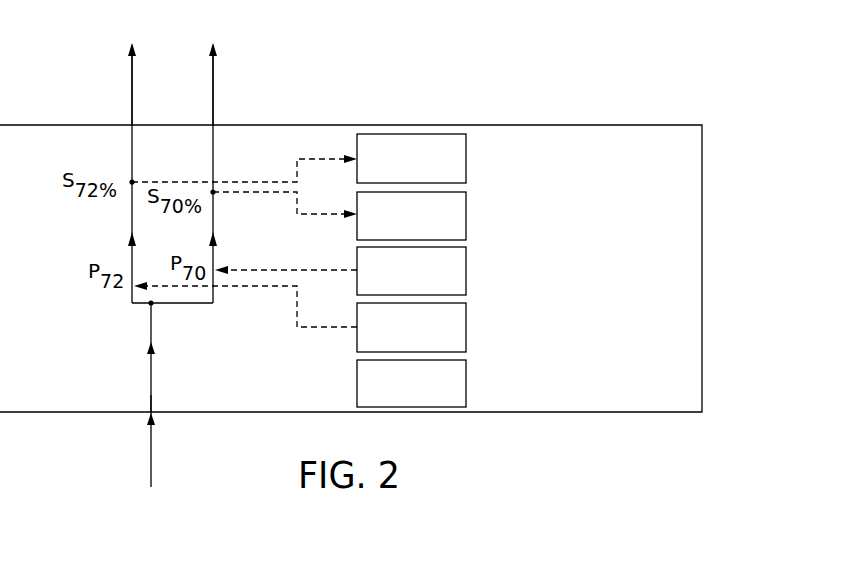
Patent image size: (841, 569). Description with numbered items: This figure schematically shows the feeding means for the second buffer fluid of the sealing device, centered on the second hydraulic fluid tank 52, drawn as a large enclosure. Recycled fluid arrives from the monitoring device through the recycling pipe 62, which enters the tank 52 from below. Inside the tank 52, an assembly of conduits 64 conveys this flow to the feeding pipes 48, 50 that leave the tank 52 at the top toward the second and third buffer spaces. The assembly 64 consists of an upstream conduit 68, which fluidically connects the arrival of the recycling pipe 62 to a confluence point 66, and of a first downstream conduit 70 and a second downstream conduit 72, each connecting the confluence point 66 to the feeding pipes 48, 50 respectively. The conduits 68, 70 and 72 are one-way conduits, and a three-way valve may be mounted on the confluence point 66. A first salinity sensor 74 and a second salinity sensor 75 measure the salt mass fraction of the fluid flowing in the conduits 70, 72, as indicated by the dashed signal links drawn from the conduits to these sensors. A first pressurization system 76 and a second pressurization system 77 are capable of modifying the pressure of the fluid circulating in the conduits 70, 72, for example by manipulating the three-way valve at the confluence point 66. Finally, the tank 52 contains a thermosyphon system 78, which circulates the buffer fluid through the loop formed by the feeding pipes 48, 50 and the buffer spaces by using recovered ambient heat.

The feeding pipe 48 is at (215, 83).
The feeding pipe 50 is at (129, 83).
The tank 52 is at (722, 198).
The recycling pipe 62 is at (153, 457).
The assembly of conduits 64 is at (135, 324).
The confluence point 66 is at (148, 304).
The upstream conduit 68 is at (150, 396).
The first downstream conduit 70 is at (215, 147).
The second downstream conduit 72 is at (129, 146).
The first salinity sensor 74 is at (411, 216).
The second salinity sensor 75 is at (411, 158).
The first pressurization system 76 is at (411, 271).
The second pressurization system 77 is at (411, 327).
The thermosyphon system 78 is at (411, 383).